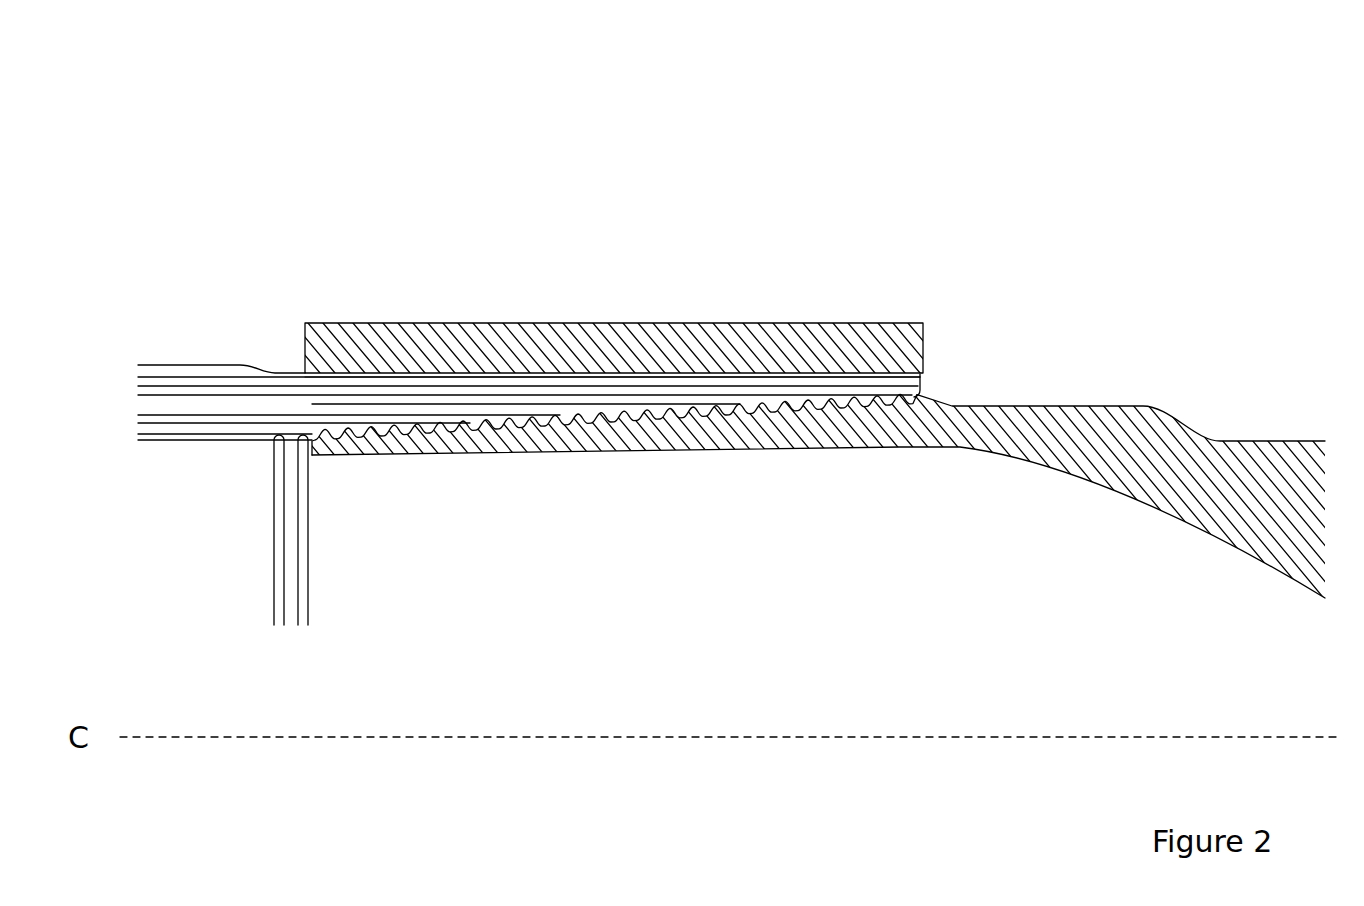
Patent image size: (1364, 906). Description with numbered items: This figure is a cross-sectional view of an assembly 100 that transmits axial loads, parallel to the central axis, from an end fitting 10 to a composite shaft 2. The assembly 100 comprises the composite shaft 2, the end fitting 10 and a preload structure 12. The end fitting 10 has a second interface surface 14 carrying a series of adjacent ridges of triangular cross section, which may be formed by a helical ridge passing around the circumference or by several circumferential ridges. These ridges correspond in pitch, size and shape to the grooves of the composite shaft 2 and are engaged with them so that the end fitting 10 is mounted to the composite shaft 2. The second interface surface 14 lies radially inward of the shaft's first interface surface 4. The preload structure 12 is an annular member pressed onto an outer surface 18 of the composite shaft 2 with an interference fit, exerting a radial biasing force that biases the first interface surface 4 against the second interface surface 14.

The composite shaft 2 is at (193, 392).
The first interface surface 4 is at (571, 412).
The end fitting 10 is at (928, 427).
The preload structure 12 is at (670, 340).
The second interface surface 14 is at (521, 447).
The outer surface 18 is at (478, 372).
The assembly 100 is at (980, 215).